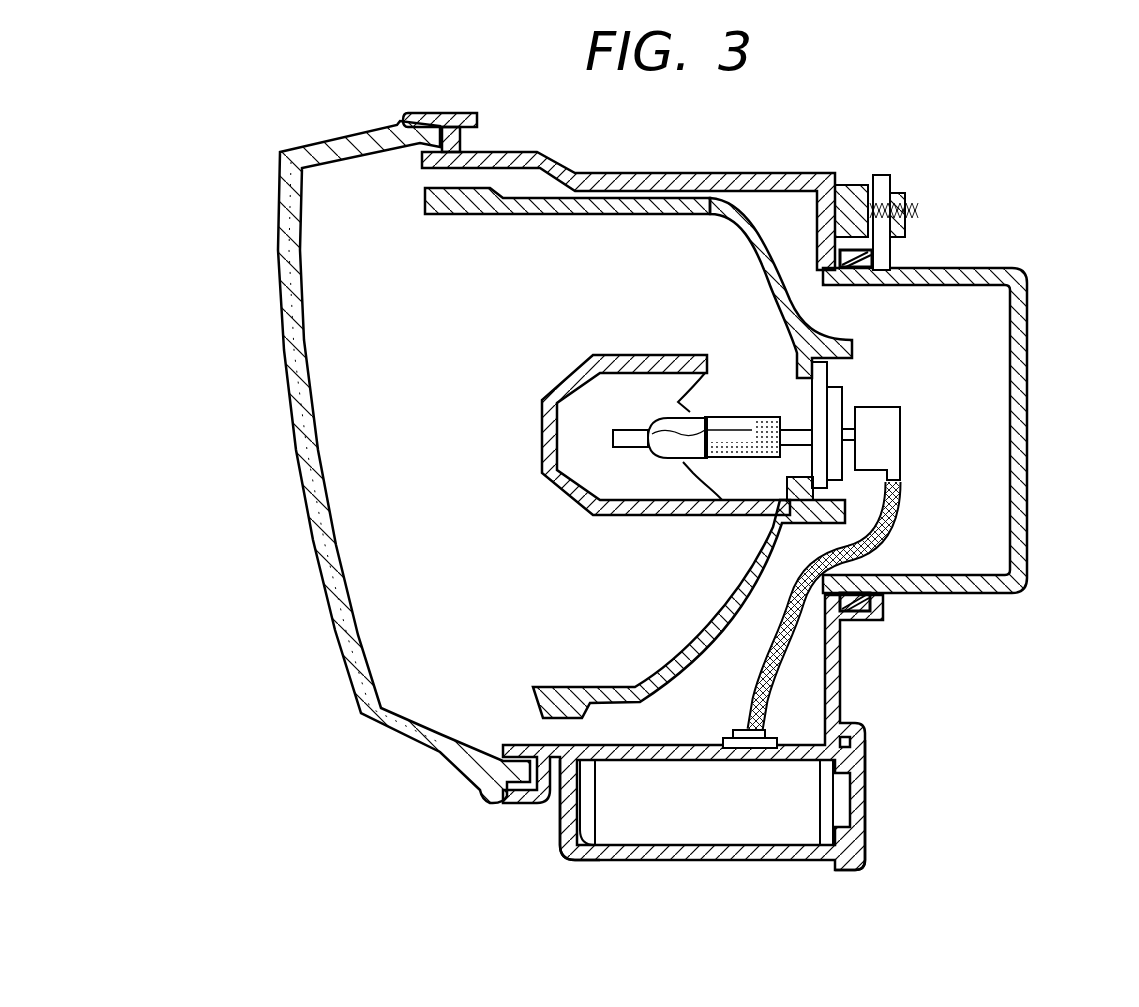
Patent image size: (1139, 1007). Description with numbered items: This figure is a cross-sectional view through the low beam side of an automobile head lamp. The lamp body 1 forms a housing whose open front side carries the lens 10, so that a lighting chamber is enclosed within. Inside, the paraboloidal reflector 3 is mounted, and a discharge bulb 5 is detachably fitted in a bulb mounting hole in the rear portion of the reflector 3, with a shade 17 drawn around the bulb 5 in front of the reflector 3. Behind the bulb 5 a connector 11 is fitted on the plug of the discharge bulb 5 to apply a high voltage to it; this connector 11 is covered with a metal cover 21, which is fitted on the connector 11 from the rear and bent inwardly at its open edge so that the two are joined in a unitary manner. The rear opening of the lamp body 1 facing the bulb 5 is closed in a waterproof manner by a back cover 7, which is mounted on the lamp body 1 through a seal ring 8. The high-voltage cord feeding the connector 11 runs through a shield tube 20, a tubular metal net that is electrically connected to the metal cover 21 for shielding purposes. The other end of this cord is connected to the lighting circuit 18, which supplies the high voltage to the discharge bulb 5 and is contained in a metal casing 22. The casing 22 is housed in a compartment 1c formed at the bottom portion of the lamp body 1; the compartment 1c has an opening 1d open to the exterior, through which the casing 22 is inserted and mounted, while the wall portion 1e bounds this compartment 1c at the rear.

The lamp body 1 is at (738, 175).
The reflector 3 is at (633, 218).
The discharge bulb 5 is at (660, 460).
The back cover 7 is at (1030, 384).
The seal ring 8 is at (878, 258).
The lens 10 is at (300, 488).
The connector 11 is at (867, 418).
The shade 17 is at (540, 422).
The lighting circuit 18 is at (820, 790).
The shield tube 20 is at (753, 690).
The metal cover 21 is at (901, 437).
The metal casing 22 is at (773, 835).
The compartment 1c is at (583, 860).
The opening 1d is at (864, 855).
The side wall of housing 1e is at (866, 813).